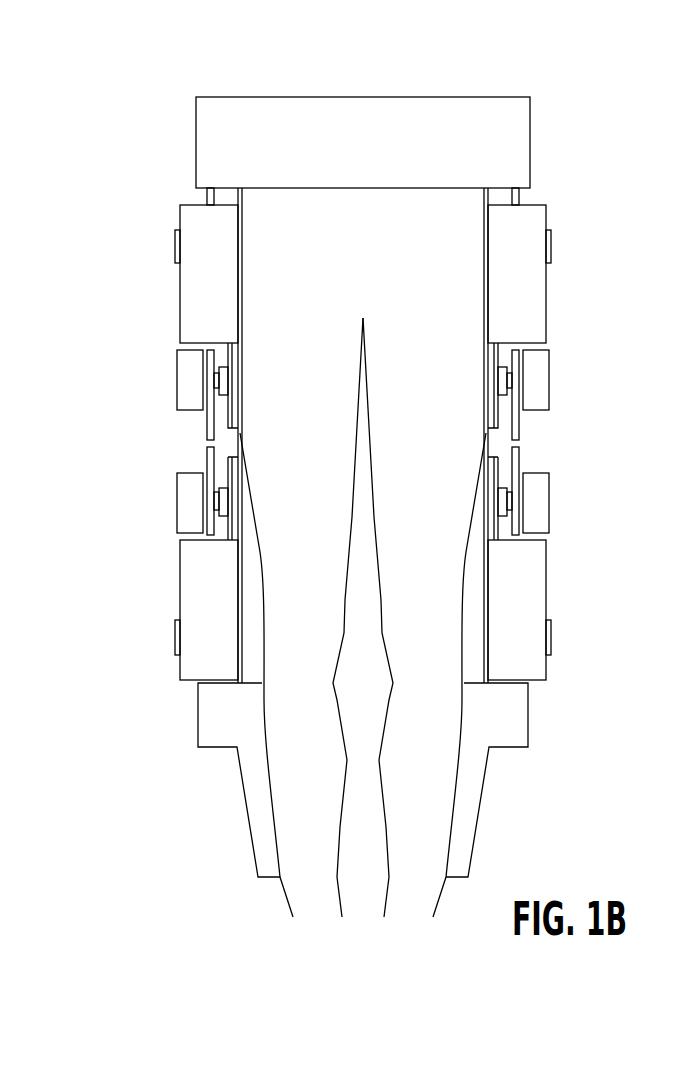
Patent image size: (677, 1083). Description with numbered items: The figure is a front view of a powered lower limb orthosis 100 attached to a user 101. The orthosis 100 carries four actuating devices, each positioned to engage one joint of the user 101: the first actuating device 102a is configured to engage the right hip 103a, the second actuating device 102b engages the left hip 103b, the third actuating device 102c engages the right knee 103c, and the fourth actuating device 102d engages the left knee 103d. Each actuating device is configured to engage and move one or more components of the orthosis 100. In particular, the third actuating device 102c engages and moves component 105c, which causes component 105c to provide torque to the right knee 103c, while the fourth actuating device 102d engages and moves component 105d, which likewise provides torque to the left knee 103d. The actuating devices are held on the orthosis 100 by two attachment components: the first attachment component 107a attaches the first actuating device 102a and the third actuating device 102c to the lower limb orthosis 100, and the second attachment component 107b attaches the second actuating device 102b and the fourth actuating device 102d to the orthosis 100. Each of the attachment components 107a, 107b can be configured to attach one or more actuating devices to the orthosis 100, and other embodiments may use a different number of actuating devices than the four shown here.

The user 101 is at (524, 44).
The lower limb orthosis 100 is at (159, 186).
The first actuating device 102a is at (141, 327).
The second actuating device 102b is at (574, 306).
The third actuating device 102c is at (135, 620).
The fourth actuating device 102d is at (591, 620).
The right hip 103a is at (258, 213).
The left hip 103b is at (468, 213).
The right knee 103c is at (297, 666).
The left knee 103d is at (420, 660).
The component 105c is at (260, 807).
The component 105d is at (464, 800).
The first attachment component 107a is at (238, 265).
The second attachment component 107b is at (489, 263).